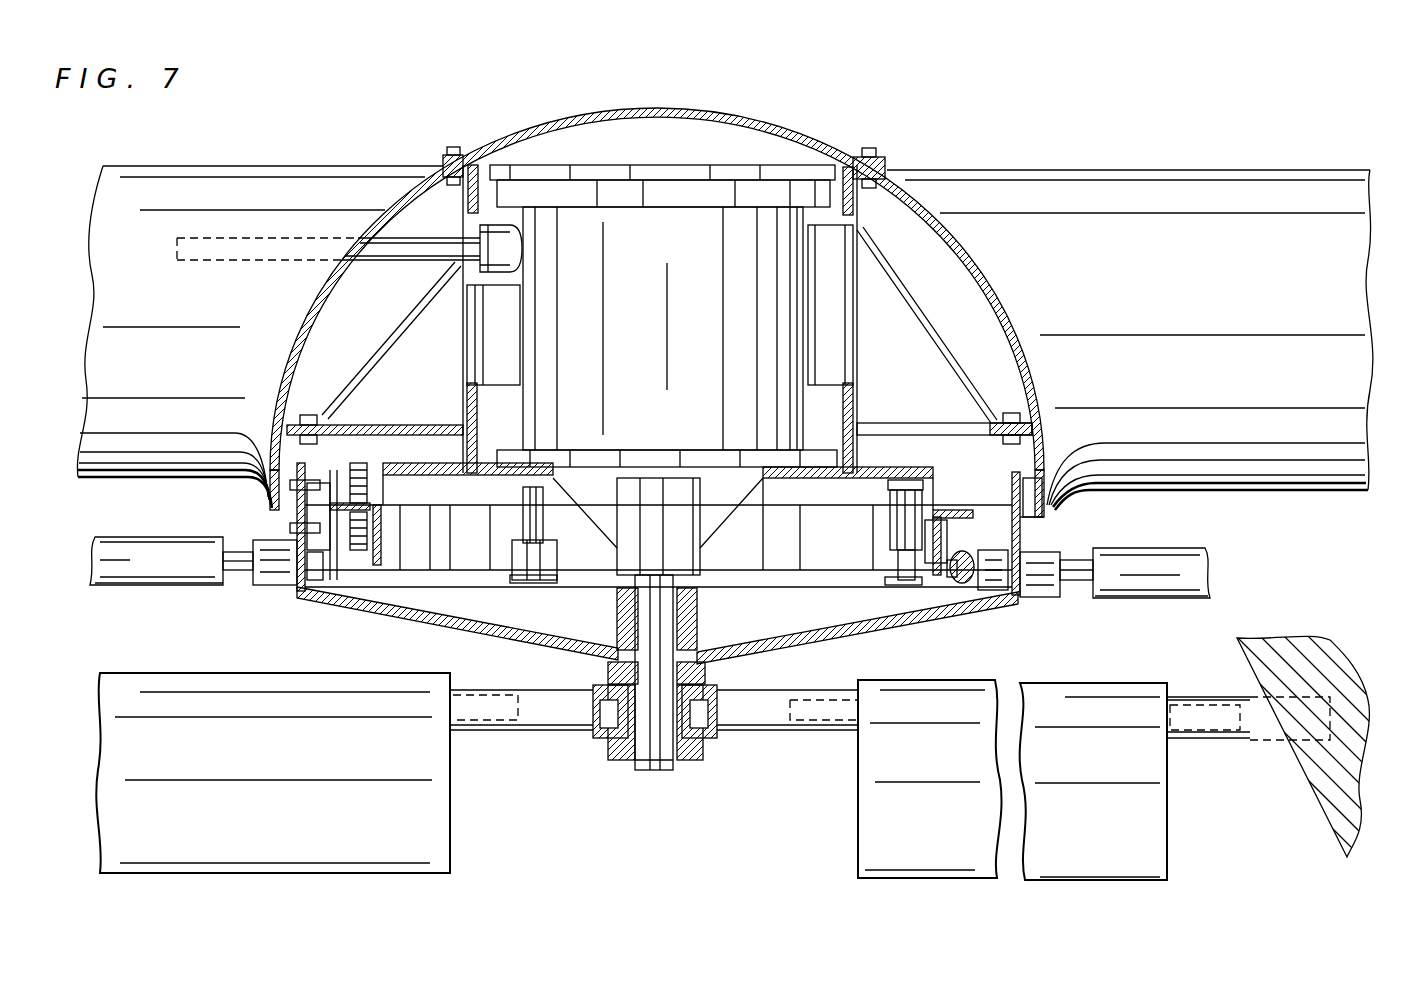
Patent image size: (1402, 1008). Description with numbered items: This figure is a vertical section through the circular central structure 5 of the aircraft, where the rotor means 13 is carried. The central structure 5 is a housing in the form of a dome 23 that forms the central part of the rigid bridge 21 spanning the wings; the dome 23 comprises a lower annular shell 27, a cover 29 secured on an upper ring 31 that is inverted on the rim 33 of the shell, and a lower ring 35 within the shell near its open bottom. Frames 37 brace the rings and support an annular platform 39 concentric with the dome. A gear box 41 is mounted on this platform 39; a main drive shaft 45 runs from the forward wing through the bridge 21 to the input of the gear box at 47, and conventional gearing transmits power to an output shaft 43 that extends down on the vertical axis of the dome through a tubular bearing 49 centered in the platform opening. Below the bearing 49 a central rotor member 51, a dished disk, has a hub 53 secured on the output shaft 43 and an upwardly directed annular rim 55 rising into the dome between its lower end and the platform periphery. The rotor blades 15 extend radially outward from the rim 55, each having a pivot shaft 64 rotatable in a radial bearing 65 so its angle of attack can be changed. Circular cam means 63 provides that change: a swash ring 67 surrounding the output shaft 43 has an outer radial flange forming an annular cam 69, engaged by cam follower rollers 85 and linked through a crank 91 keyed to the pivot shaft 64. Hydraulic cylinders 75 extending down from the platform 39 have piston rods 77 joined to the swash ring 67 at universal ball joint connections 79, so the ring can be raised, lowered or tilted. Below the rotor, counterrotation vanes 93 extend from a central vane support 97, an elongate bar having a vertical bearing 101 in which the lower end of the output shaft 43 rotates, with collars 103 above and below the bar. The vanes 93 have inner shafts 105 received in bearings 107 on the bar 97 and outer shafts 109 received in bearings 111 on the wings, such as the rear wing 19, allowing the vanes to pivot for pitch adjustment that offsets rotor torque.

The circular central structure 5 is at (830, 90).
The rotor means 13 is at (1125, 513).
The rotor blade 15 is at (183, 540).
The rear wing 19 is at (1287, 805).
The bridge 21 is at (275, 166).
The dome 23 is at (972, 232).
The lower annular shell 27 is at (990, 282).
The cover 29 is at (678, 108).
The upper ring 31 is at (500, 165).
The rim 33 is at (440, 163).
The lower ring 35 is at (280, 430).
The frames 37 is at (395, 318).
The annular platform 39 is at (893, 467).
The gear box 41 is at (780, 283).
The output shaft 43 is at (652, 765).
The main drive shaft 45 is at (437, 236).
The input of the gear box 47 is at (458, 270).
The tubular bearing 49 is at (632, 555).
The central rotor member 51 is at (770, 485).
The hub 53 is at (620, 590).
The annular rim 55 is at (1027, 540).
The circular cam means 63 is at (956, 503).
The pivot shaft 64 is at (1077, 557).
The radial bearing 65 is at (1037, 583).
The swash ring 67 is at (790, 507).
The annular cam 69 is at (355, 487).
The hydraulic cylinder 75 is at (887, 533).
The piston rod 77 is at (512, 558).
The universal ball joint connection 79 is at (533, 580).
The rollers 85 is at (377, 467).
The crank 91 is at (963, 560).
The counterrotation vane 93 is at (267, 680).
The central vane support 97 is at (595, 688).
The vertical bearing 101 is at (718, 685).
The collars 103 is at (732, 647).
The vane inner shaft 105 is at (805, 735).
The bearing 107 is at (480, 733).
The vane outer shaft 109 is at (1200, 703).
The bearing 111 is at (1228, 737).